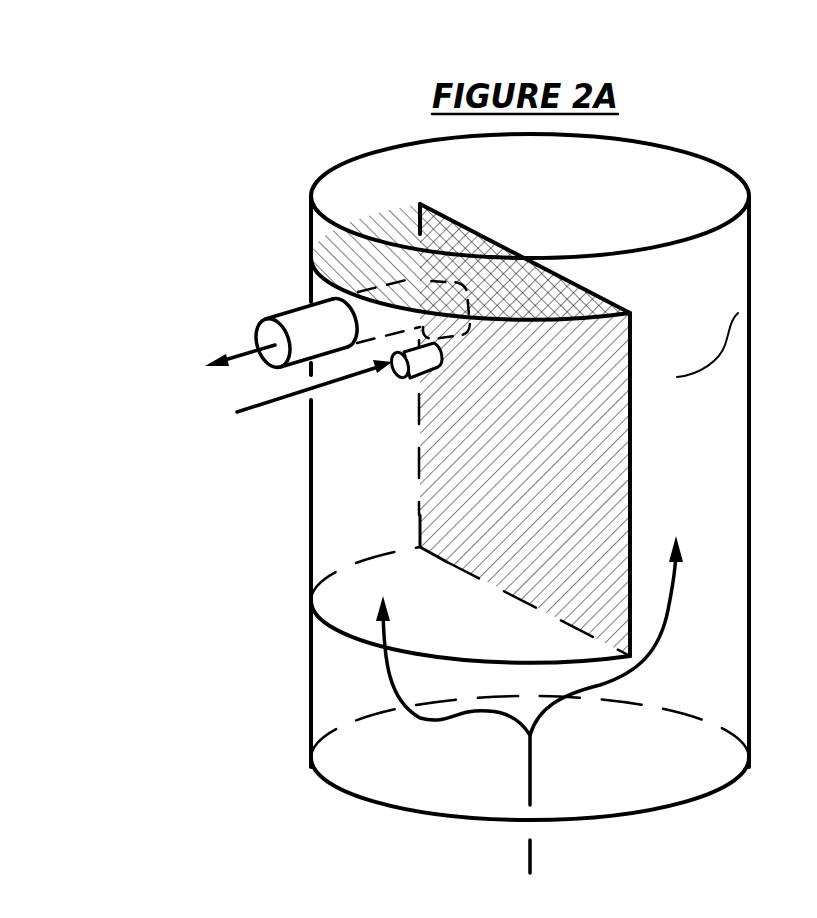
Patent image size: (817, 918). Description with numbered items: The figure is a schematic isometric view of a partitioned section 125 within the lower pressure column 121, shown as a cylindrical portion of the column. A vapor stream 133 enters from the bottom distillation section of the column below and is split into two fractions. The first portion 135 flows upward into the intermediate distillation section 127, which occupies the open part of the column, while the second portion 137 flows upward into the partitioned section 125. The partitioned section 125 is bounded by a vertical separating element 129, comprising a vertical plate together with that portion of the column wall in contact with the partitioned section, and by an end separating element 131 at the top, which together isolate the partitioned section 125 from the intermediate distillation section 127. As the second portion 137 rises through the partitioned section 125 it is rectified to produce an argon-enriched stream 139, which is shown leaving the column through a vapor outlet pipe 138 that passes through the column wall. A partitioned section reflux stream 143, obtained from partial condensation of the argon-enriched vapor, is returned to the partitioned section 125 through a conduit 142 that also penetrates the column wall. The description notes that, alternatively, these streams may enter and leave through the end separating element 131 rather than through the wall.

The lower pressure column 121 is at (309, 677).
The partitioned section 125 is at (327, 462).
The intermediate distillation section 127 is at (752, 303).
The vertical separating element 129 is at (545, 577).
The end separating element 131 is at (395, 228).
The vapor stream 133 is at (530, 822).
The first portion 135 is at (677, 607).
The second portion 137 is at (433, 725).
The vapor outlet pipe 138 is at (285, 315).
The argon-enriched stream 139 is at (215, 363).
The conduit 142 is at (404, 376).
The partitioned section reflux stream 143 is at (290, 400).